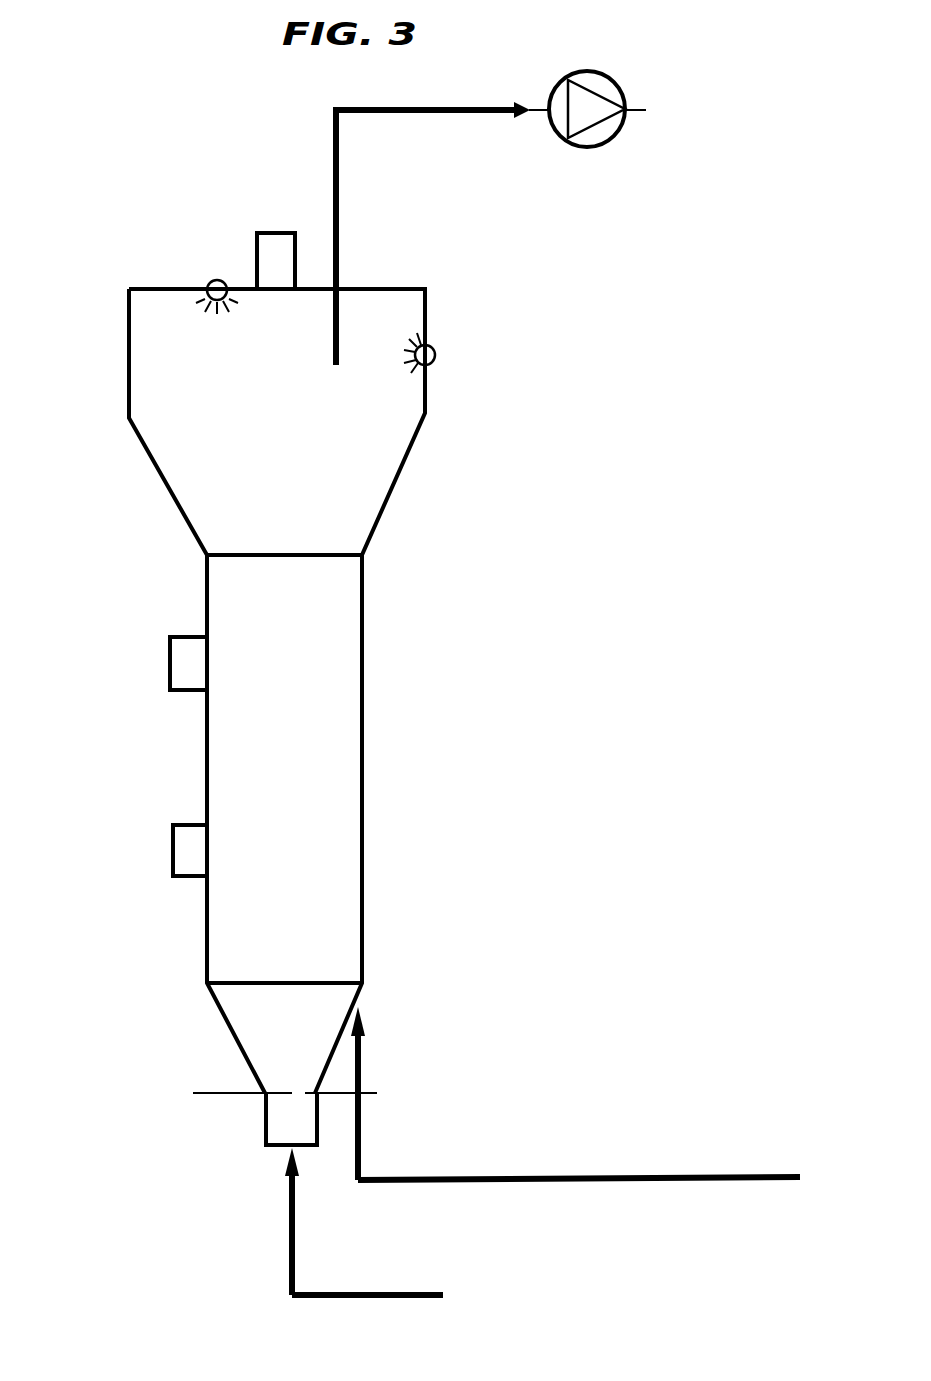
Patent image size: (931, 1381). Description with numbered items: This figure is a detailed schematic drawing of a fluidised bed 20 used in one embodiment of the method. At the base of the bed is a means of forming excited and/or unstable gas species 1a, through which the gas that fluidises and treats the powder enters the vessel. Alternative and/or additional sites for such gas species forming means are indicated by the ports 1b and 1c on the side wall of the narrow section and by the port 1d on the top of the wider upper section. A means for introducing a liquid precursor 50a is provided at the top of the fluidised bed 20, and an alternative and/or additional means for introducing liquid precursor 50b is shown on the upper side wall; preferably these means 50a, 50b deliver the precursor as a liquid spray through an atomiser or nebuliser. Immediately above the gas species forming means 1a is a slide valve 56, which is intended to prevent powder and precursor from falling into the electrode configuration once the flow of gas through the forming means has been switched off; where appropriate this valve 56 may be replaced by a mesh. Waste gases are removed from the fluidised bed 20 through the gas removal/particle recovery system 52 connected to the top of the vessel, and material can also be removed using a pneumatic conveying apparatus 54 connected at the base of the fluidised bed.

The fluidised bed 20 is at (364, 757).
The means of forming excited and/or unstable gas species 1a is at (266, 1122).
The means of forming excited and/or unstable gas species 1b is at (173, 850).
The means of forming excited and/or unstable gas species 1c is at (170, 665).
The means of forming excited and/or unstable gas species 1d is at (280, 233).
The means for introducing a liquid precursor 50a is at (216, 279).
The means for introducing a liquid precursor 50b is at (436, 355).
The gas removal/particle recovery system 52 is at (595, 148).
The pneumatic conveying apparatus 54 is at (605, 1181).
The slide valve 56 is at (190, 1093).